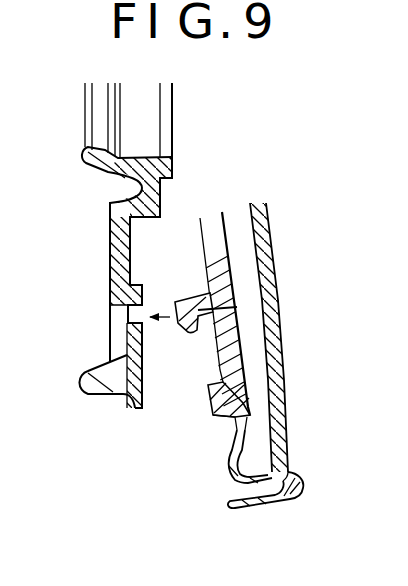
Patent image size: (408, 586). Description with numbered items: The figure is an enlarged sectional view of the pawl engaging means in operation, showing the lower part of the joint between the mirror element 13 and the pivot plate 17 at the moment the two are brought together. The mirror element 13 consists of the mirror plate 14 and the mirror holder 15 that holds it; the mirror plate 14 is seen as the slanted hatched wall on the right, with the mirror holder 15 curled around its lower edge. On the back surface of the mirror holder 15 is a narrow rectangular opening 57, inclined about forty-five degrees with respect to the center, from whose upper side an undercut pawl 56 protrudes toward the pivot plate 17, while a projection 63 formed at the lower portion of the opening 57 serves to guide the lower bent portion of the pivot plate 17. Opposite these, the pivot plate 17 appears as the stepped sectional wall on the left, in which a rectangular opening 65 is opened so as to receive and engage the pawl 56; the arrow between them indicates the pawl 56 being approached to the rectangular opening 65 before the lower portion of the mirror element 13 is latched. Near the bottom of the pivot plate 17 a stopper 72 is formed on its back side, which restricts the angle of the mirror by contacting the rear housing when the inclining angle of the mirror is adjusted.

The mirror element 13 is at (314, 495).
The mirror plate 14 is at (289, 400).
The mirror holder 15 is at (228, 467).
The pivot plate 17 is at (107, 221).
The pawl 56 is at (190, 305).
The rectangular opening 57 is at (215, 333).
The projection 63 is at (215, 407).
The rectangular opening 65 is at (115, 325).
The stopper 72 is at (90, 377).